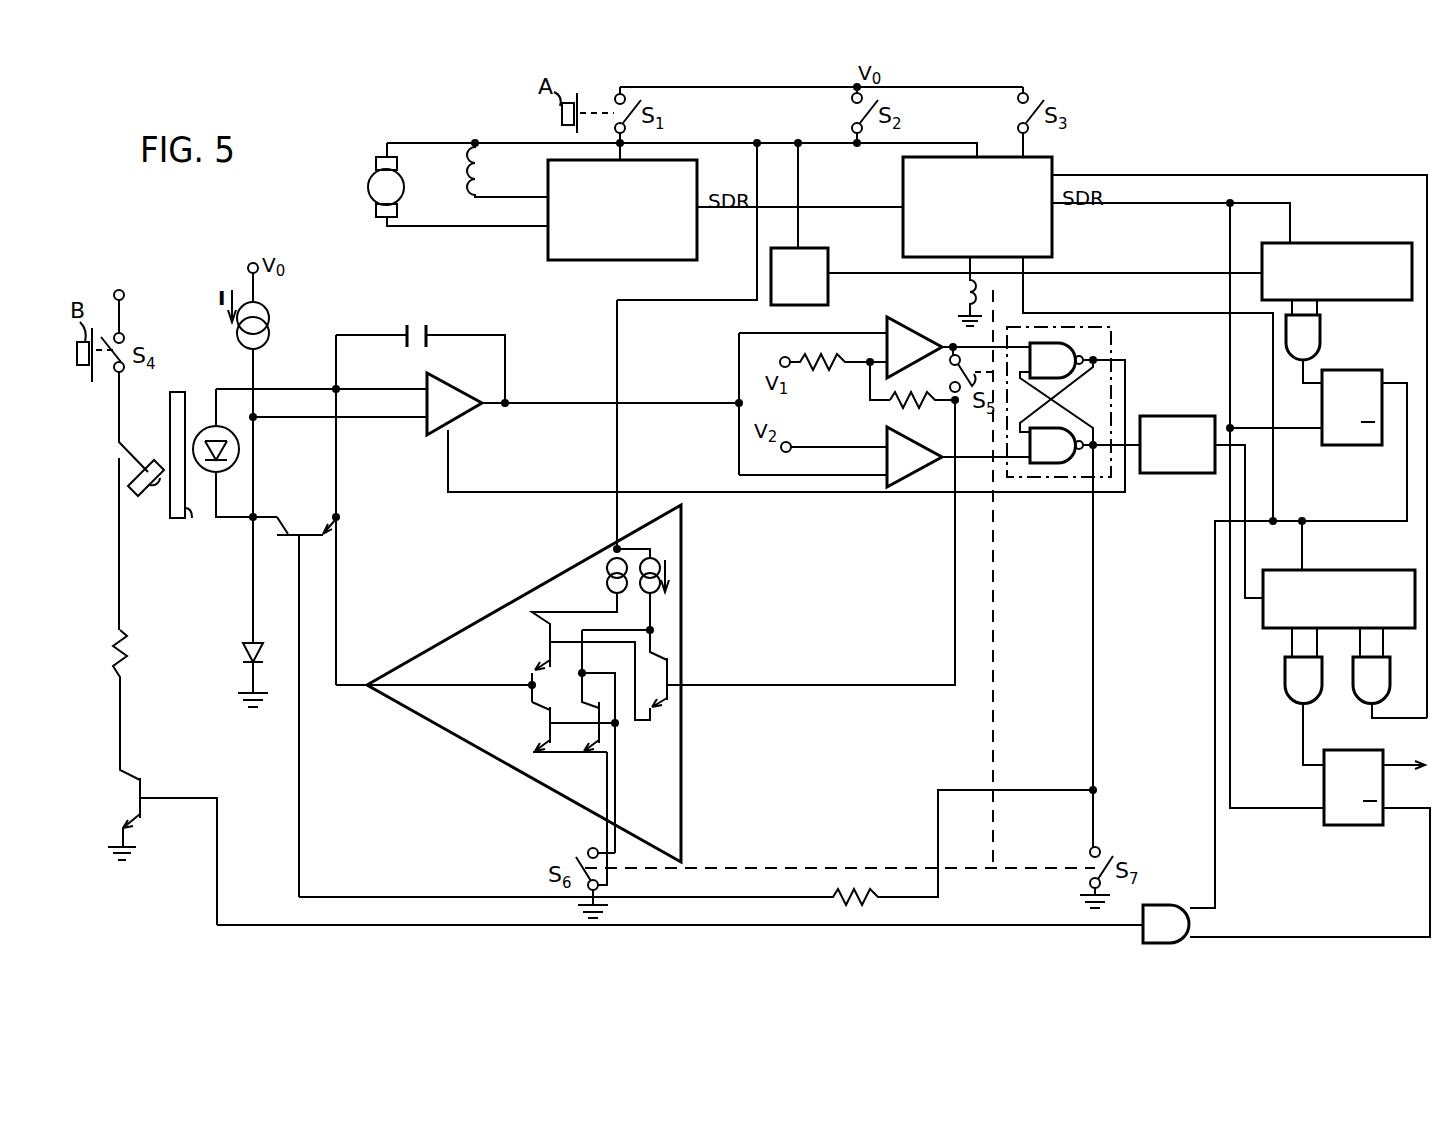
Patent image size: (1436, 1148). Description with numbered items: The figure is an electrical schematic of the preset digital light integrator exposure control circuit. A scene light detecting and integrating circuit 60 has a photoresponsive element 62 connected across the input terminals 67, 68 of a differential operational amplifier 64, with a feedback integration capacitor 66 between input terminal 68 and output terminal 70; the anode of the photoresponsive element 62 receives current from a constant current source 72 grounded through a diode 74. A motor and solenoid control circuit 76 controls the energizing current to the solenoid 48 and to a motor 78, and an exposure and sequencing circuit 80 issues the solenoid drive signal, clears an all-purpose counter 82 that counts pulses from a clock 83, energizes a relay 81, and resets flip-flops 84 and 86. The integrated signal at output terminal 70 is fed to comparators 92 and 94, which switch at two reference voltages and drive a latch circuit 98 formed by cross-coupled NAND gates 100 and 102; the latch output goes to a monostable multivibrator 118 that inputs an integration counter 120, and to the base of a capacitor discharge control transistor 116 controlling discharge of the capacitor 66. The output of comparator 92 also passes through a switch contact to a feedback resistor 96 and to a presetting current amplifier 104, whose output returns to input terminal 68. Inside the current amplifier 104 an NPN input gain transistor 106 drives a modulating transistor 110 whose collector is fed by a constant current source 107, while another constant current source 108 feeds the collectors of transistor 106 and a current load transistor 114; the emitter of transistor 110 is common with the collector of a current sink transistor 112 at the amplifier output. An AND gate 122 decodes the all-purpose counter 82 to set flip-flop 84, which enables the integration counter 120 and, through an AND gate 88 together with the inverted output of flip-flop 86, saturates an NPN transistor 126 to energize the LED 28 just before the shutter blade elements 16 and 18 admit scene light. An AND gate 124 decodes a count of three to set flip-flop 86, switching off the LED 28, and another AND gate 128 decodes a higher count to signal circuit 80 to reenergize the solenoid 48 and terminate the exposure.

The shutter blade element 16 is at (169, 412).
The shutter blade element 18 is at (192, 518).
The LED 28 is at (148, 497).
The solenoid 48 is at (462, 178).
The scene light detecting and integrating circuit 60 is at (352, 318).
The photoresponsive element 62 is at (210, 425).
The operational amplifier 64 is at (456, 425).
The feedback integration capacitor 66 is at (428, 327).
The input terminal 67 is at (353, 418).
The input terminal 68 is at (353, 388).
The output terminal 70 is at (552, 402).
The constant current source 72 is at (268, 318).
The diode 74 is at (240, 655).
The motor and solenoid control circuit 76 is at (652, 262).
The motor 78 is at (368, 187).
The exposure and sequencing circuit 80 is at (1054, 240).
The relay 81 is at (960, 285).
The all-purpose counter 82 is at (1350, 242).
The clock 83 is at (830, 285).
The flip-flop 84 is at (1362, 370).
The flip-flop 86 is at (1348, 828).
The AND gate 88 is at (1162, 905).
The comparator 92 is at (918, 333).
The comparator 94 is at (915, 447).
The feedback resistor 96 is at (898, 404).
The latch circuit 98 is at (1082, 422).
The NAND gate 100 is at (1050, 344).
The NAND gate 102 is at (1045, 465).
The current amplifier 104 is at (545, 581).
The input gain transistor 106 is at (670, 658).
The constant current source 107 is at (606, 560).
The constant current source 108 is at (660, 560).
The modulating transistor 110 is at (528, 630).
The current sink transistor 112 is at (528, 712).
The current load transistor 114 is at (595, 748).
The capacitor discharge control transistor 116 is at (315, 540).
The monostable multivibrator 118 is at (1165, 416).
The integration counter 120 is at (1390, 566).
The AND gate 122 is at (1322, 333).
The AND gate 124 is at (1286, 690).
The NPN transistor 126 is at (130, 772).
The AND gate 128 is at (1366, 700).